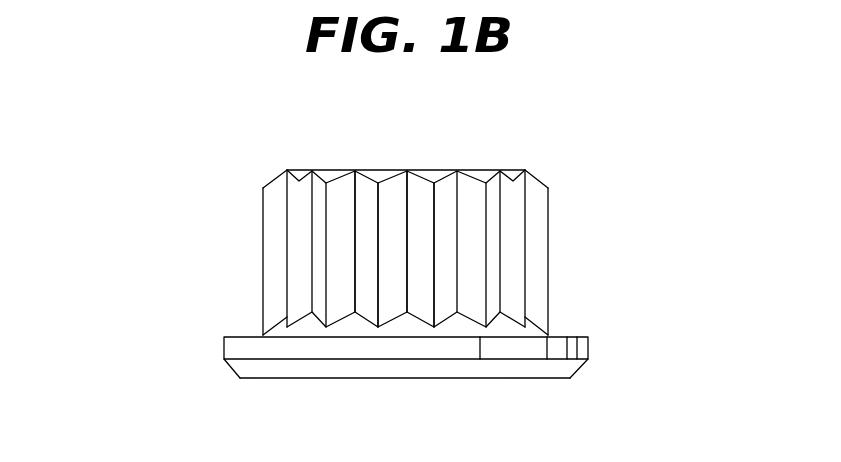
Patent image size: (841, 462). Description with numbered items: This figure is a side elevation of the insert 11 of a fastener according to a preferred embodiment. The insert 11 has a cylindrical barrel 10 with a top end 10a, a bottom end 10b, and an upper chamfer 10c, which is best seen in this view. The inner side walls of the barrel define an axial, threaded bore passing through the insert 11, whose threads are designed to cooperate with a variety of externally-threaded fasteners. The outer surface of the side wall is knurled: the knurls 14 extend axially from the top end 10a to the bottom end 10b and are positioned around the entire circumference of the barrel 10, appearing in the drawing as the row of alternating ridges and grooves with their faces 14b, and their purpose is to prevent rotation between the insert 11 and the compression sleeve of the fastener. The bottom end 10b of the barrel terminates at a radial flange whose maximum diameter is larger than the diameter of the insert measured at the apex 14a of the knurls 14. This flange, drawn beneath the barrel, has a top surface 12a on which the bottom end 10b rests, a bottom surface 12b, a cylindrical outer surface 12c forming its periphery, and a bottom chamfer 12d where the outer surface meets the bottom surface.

The cylindrical barrel 10 is at (400, 206).
The top end 10a is at (306, 170).
The bottom end 10b is at (258, 336).
The upper chamfer 10c is at (638, 325).
The insert 11 is at (212, 256).
The top surface 12a is at (573, 337).
The bottom surface 12b is at (512, 378).
The cylindrical outer surface 12c is at (577, 347).
The bottom chamfer 12d is at (248, 368).
The knurls 14 is at (447, 218).
The apex of the knurls 14a is at (378, 225).
The second pleat face 14b is at (413, 213).